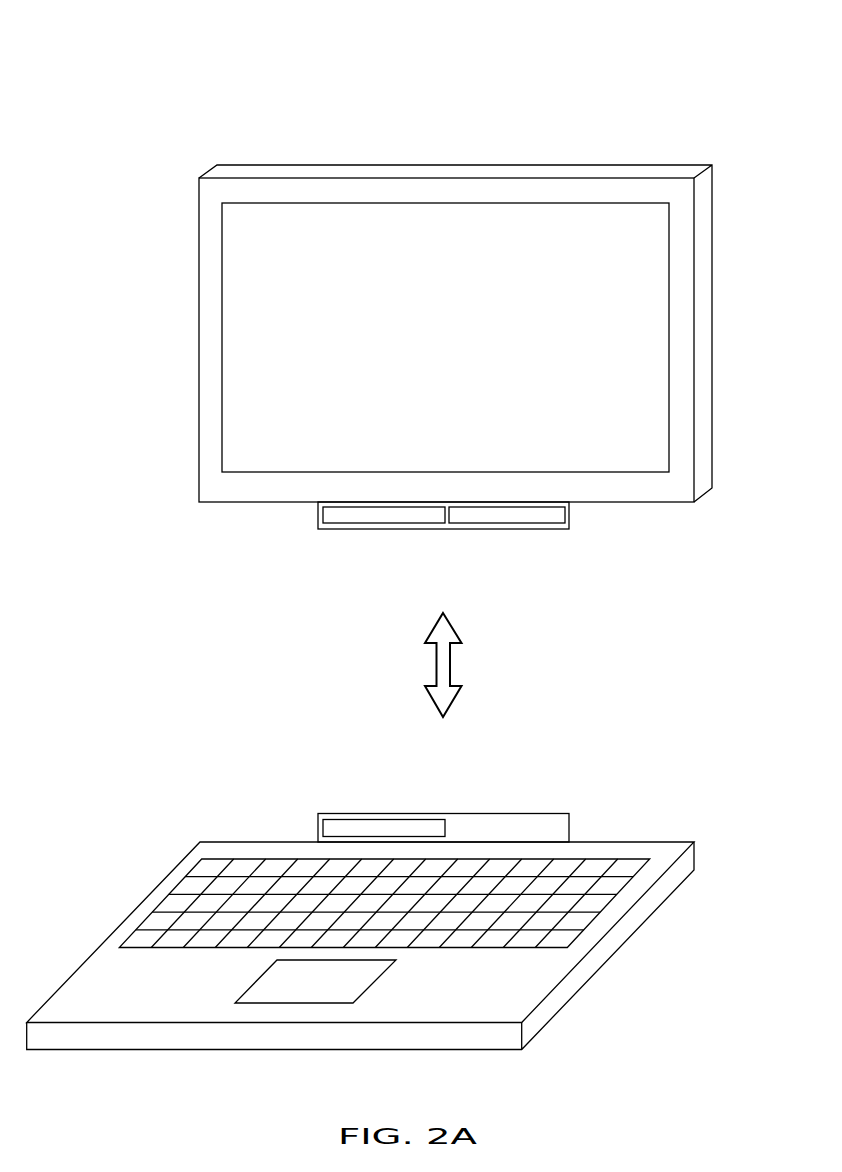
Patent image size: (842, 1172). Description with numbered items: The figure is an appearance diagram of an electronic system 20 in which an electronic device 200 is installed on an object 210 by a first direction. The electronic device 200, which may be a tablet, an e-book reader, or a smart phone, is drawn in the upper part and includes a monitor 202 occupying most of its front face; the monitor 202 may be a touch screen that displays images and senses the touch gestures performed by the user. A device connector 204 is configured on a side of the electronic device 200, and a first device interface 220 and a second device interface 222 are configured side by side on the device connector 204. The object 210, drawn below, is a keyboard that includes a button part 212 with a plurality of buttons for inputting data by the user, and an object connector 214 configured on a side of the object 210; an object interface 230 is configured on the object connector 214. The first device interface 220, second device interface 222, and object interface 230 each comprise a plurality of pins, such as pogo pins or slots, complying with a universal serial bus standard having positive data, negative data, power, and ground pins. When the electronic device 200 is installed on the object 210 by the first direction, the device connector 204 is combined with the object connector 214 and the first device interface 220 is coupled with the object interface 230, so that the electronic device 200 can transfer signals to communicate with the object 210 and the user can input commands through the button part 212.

The electronic system 20 is at (701, 66).
The electronic device 200 is at (713, 207).
The monitor 202 is at (647, 272).
The device connector 204 is at (318, 517).
The first device interface 220 is at (388, 530).
The second device interface 222 is at (508, 520).
The object 210 is at (670, 840).
The button part 212 is at (600, 900).
The object connector 214 is at (318, 829).
The object interface 230 is at (392, 830).